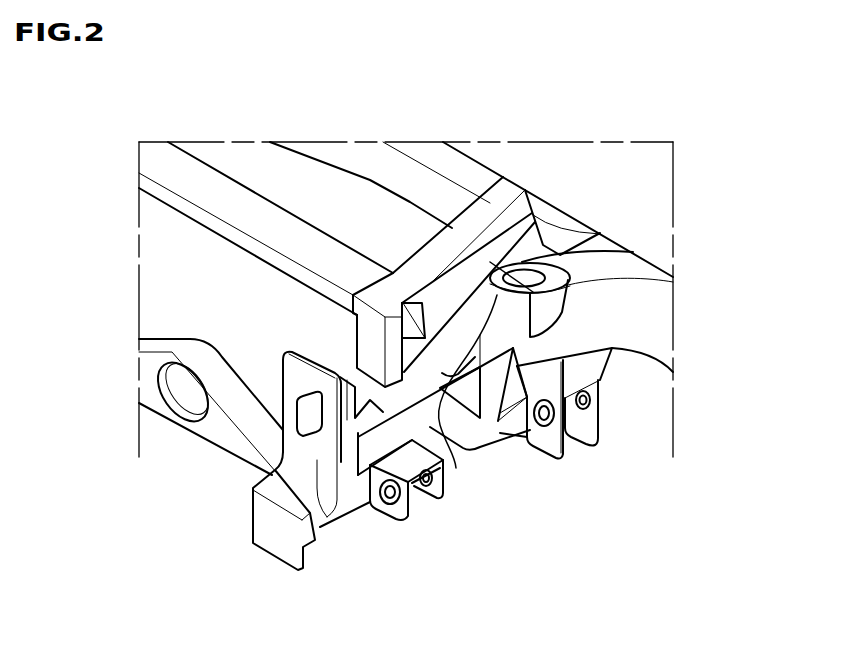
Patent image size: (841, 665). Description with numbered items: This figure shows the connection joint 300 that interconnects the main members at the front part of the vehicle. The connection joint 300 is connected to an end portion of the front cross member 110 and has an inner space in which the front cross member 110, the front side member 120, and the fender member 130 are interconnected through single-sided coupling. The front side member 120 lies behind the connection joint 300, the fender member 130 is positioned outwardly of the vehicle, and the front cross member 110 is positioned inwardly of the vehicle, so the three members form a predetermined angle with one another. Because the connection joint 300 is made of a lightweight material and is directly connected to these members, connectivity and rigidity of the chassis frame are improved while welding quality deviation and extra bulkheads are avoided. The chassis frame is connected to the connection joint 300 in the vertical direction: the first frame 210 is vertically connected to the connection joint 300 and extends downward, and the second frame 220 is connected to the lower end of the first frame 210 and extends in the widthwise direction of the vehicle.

The front cross member 110 is at (192, 177).
The front side member 120 is at (468, 223).
The fender member 130 is at (540, 296).
The first frame 210 is at (317, 460).
The second frame 220 is at (153, 383).
The connection joint 300 is at (412, 360).